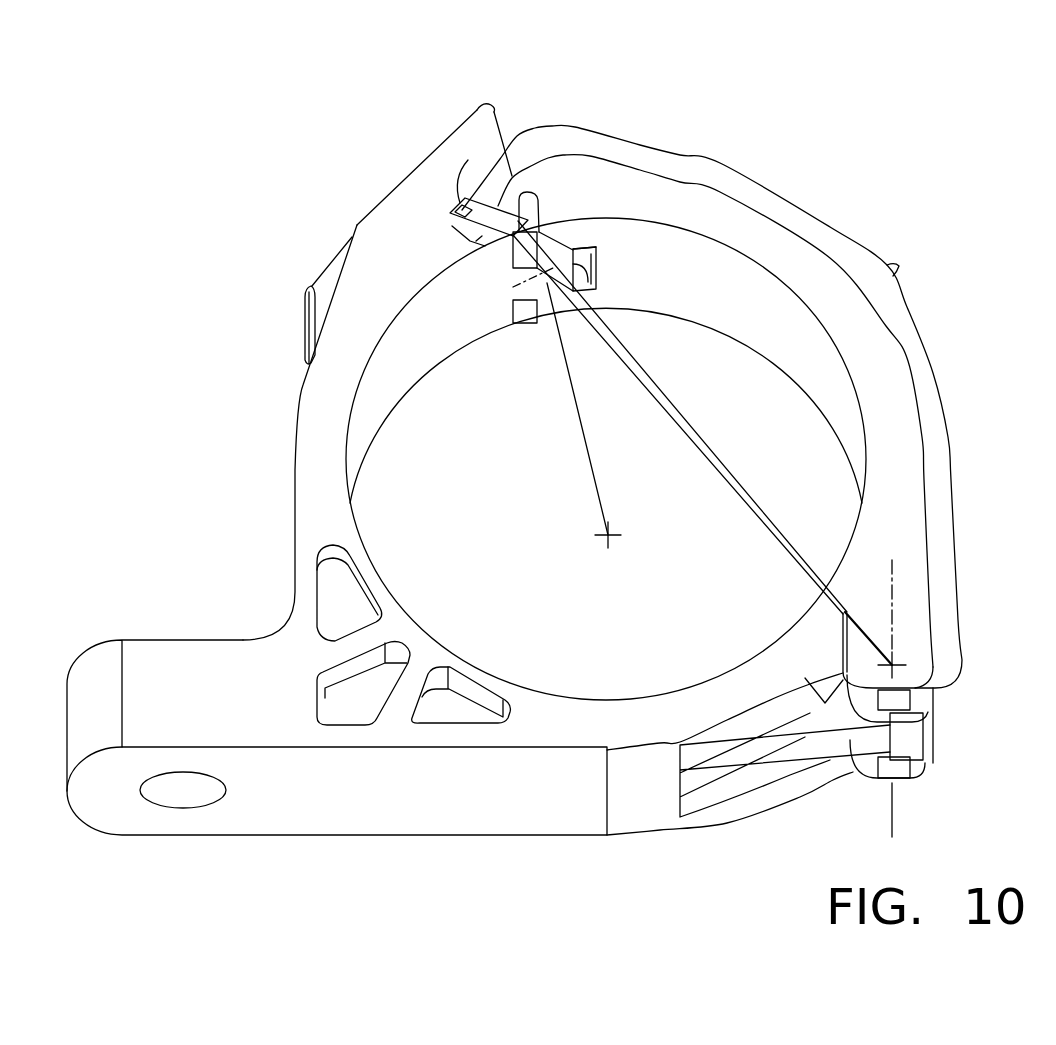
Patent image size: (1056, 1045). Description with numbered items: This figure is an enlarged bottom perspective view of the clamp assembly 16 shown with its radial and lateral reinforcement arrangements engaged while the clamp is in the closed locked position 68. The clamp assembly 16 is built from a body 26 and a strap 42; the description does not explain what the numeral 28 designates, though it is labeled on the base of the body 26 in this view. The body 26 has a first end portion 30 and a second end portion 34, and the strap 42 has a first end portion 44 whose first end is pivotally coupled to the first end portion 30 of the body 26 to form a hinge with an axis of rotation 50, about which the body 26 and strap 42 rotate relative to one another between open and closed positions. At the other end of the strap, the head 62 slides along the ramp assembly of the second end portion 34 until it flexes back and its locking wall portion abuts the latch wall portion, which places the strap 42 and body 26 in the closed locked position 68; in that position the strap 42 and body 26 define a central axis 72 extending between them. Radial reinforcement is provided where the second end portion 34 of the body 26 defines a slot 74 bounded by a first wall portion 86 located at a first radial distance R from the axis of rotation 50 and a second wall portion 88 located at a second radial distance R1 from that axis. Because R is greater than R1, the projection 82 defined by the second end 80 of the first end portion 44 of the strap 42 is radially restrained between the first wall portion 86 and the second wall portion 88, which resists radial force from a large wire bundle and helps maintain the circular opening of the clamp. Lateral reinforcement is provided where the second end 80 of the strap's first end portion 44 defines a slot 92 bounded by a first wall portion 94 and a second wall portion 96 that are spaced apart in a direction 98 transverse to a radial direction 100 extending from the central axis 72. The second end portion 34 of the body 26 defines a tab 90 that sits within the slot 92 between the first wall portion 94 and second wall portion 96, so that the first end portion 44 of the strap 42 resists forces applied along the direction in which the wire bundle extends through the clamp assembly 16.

The clamp assembly 16 is at (889, 124).
The body 26 is at (320, 525).
The base 28 is at (387, 797).
The first end portion 30 is at (839, 750).
The second end portion 34 is at (440, 130).
The strap 42 is at (928, 297).
The first end portion 44 is at (897, 266).
The axis of rotation 50 is at (893, 621).
The head 62 is at (318, 290).
The closed locked position 68 is at (464, 98).
The central axis 72 is at (605, 537).
The slot 74 is at (463, 248).
The second end 80 is at (614, 248).
The projection 82 is at (463, 172).
The first wall portion 86 is at (452, 198).
The second wall portion 88 is at (479, 248).
The tab 90 is at (543, 247).
The slot 92 is at (590, 238).
The first wall portion 94 is at (557, 307).
The second wall portion 96 is at (565, 237).
The direction 98 is at (597, 267).
The radial direction 100 is at (573, 393).
The first radial distance R is at (700, 440).
The second radial distance R1 is at (722, 477).